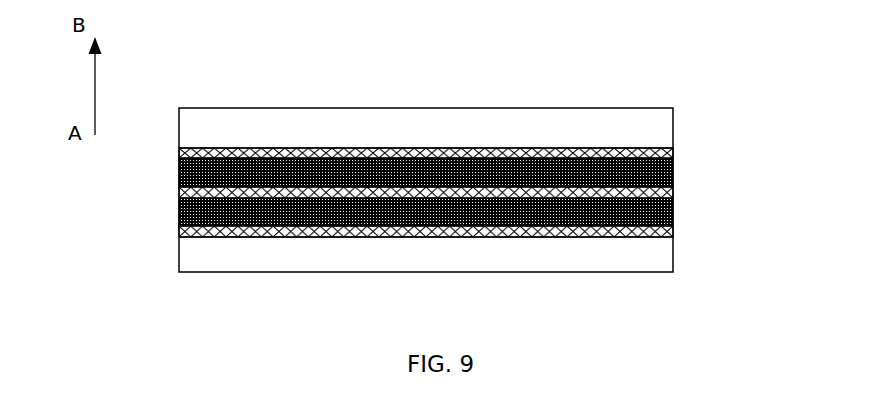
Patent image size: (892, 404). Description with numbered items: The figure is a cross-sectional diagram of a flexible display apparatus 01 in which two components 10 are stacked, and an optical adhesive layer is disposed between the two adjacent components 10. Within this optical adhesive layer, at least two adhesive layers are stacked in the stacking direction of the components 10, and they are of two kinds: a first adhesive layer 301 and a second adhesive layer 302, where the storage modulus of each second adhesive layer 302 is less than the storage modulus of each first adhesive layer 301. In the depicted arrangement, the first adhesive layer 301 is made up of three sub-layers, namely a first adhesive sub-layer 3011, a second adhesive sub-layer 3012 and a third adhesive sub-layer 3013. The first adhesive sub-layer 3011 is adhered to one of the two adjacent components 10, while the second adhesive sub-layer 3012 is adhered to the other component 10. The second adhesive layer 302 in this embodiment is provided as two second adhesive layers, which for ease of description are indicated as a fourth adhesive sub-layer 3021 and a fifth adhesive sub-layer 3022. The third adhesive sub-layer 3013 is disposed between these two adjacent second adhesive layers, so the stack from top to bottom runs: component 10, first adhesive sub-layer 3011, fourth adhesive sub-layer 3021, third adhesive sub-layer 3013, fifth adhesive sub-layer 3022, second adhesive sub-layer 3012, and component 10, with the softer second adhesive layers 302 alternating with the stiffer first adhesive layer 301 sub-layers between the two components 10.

The flexible display apparatus 01 is at (217, 78).
The component 10 is at (662, 123).
The first adhesive layer 301 is at (510, 190).
The first adhesive sub-layer 3011 is at (672, 155).
The second adhesive sub-layer 3012 is at (672, 232).
The third adhesive sub-layer 3013 is at (672, 193).
The second adhesive layer 302 is at (350, 192).
The fourth adhesive sub-layer 3021 is at (183, 170).
The fifth adhesive sub-layer 3022 is at (183, 211).